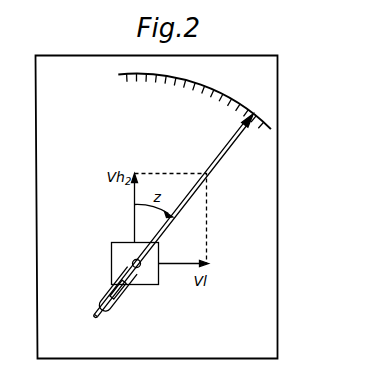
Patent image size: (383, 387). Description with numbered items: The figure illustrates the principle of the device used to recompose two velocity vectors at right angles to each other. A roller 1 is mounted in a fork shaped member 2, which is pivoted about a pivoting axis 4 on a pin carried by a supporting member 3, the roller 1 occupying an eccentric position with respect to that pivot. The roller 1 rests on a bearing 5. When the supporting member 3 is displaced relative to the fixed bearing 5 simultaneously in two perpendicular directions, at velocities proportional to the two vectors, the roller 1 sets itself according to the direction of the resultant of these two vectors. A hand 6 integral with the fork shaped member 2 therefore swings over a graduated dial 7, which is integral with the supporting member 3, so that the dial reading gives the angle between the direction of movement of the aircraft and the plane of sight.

The roller 1 is at (97, 317).
The fork shaped member 2 is at (121, 297).
The supporting member 3 is at (116, 250).
The pivoting axis 4 is at (139, 267).
The bearing 5 is at (262, 339).
The hand 6 is at (219, 156).
The graduated dial 7 is at (213, 93).